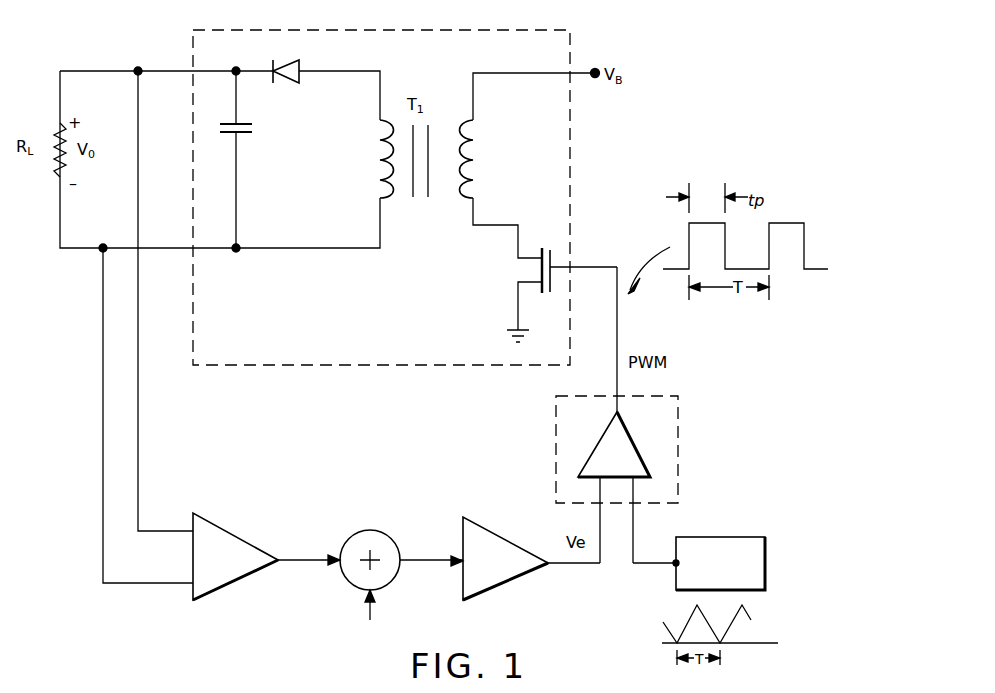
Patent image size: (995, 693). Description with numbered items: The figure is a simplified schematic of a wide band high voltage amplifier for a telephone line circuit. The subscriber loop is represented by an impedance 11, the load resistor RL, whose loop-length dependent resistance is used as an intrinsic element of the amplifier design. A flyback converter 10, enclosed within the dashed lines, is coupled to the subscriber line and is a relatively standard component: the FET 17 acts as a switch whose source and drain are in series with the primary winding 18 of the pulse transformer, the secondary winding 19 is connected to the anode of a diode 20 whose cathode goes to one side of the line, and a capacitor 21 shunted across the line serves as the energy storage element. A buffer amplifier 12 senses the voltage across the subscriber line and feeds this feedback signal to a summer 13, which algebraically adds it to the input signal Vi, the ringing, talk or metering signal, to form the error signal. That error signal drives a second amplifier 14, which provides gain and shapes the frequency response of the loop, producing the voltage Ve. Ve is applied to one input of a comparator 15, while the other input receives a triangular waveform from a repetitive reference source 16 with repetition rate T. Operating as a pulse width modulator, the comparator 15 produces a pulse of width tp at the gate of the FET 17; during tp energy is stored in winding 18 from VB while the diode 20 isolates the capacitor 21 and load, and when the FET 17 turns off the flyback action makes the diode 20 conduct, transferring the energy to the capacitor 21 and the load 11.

The flyback converter 10 is at (428, 30).
The impedance 11 is at (57, 165).
The amplifier 12 is at (225, 586).
The summer 13 is at (352, 540).
The second amplifier 14 is at (494, 589).
The comparator 15 is at (630, 430).
The repetitive reference source 16 is at (709, 537).
The FET 17 is at (533, 254).
The winding 18 is at (457, 150).
The winding 19 is at (378, 143).
The diode 20 is at (287, 84).
The capacitor 21 is at (246, 137).